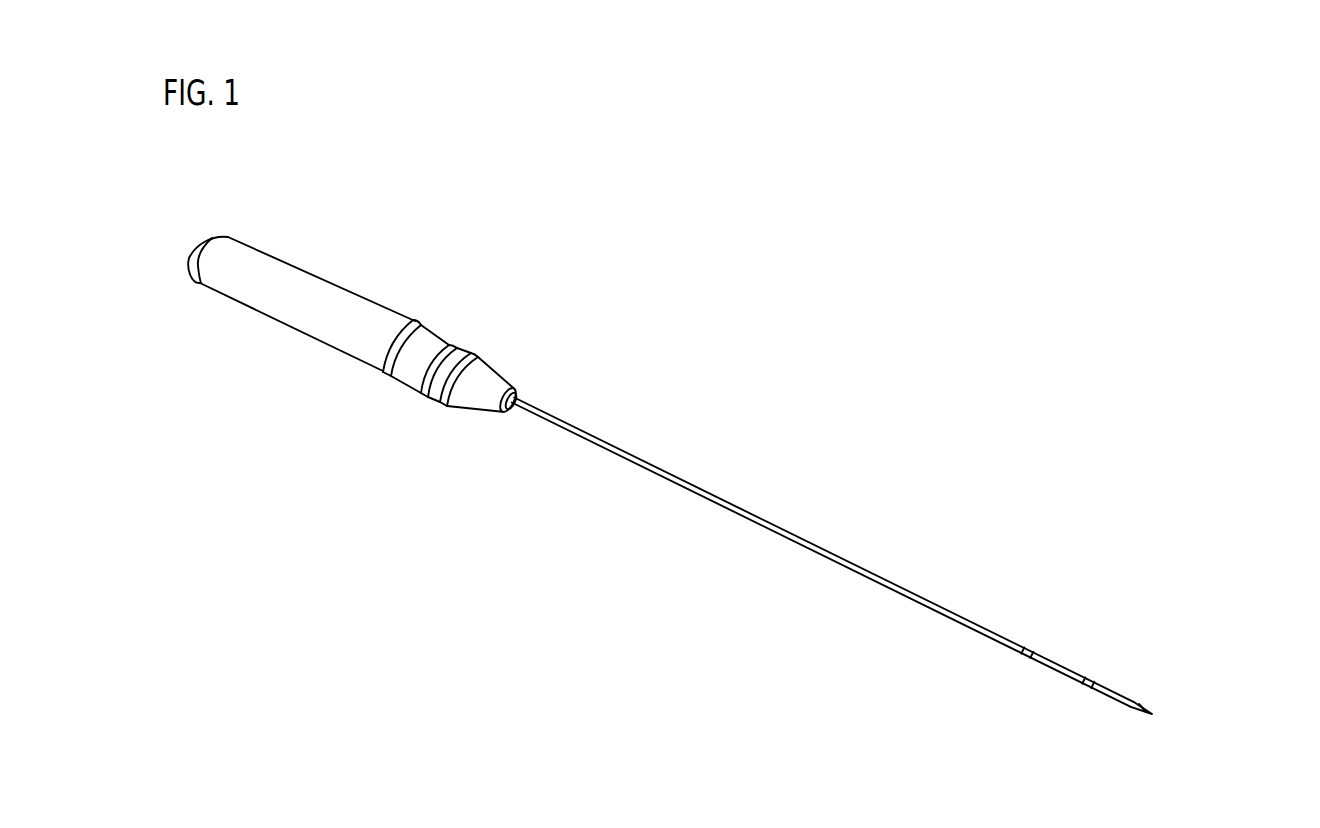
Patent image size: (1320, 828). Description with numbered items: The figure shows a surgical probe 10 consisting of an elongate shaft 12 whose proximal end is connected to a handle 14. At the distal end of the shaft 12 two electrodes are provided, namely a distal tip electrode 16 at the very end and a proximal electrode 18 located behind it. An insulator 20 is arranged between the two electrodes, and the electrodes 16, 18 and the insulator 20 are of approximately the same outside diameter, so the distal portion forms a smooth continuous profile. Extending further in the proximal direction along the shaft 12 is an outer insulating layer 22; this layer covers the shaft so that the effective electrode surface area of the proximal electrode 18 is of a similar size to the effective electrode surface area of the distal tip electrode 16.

The surgical probe 10 is at (658, 373).
The shaft 12 is at (922, 502).
The handle 14 is at (337, 282).
The distal tip electrode 16 is at (1128, 697).
The proximal electrode 18 is at (1037, 652).
The insulator 20 is at (1092, 678).
The outer insulating layer 22 is at (667, 470).